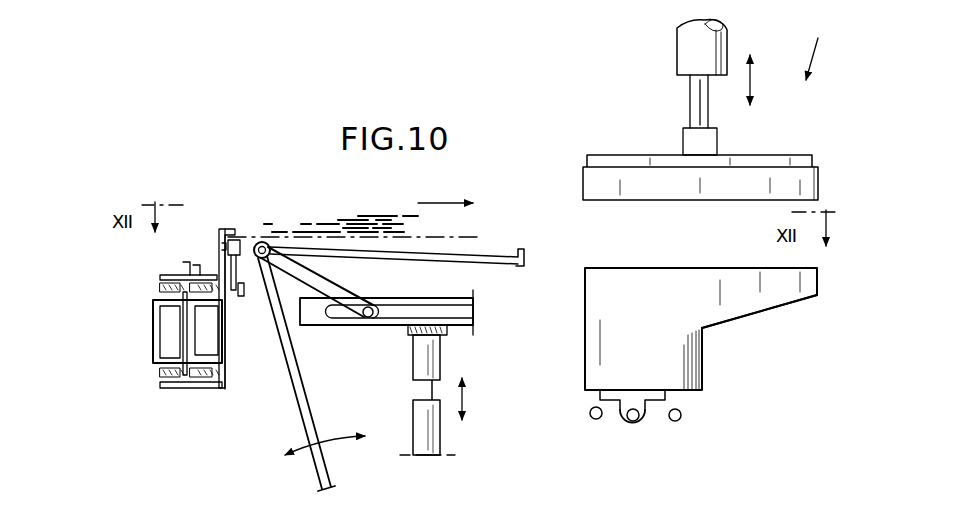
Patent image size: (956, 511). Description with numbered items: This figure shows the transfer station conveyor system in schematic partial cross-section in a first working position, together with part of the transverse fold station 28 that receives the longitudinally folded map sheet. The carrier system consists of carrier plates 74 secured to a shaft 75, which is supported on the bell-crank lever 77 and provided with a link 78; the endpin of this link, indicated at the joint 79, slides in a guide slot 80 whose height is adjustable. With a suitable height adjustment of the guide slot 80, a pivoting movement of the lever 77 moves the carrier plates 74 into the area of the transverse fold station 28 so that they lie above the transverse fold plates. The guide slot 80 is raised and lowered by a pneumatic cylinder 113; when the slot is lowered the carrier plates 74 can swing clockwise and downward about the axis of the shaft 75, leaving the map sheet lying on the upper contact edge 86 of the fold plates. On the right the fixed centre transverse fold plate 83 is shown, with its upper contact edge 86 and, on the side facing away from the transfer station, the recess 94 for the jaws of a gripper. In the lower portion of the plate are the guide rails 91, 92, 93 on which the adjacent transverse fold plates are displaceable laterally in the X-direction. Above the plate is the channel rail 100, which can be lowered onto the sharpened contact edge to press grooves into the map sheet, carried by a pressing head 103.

The transverse fold station 28 is at (819, 46).
The carrier plates 74 is at (470, 262).
The shaft 75 is at (255, 263).
The bell-crank lever 77 is at (304, 405).
The link 78 is at (318, 283).
The joint pin 79 is at (368, 318).
The guide slot 80 is at (405, 310).
The centre transverse fold plate 83 is at (650, 340).
The upper contact edge 86 is at (701, 304).
The guide rail 91 is at (590, 413).
The guide rail 92 is at (633, 428).
The guide rail 93 is at (681, 414).
The recess 94 is at (754, 315).
The channel rail 100 is at (795, 180).
The pressing head 103 is at (685, 55).
The pneumatic cylinder 113 is at (437, 438).